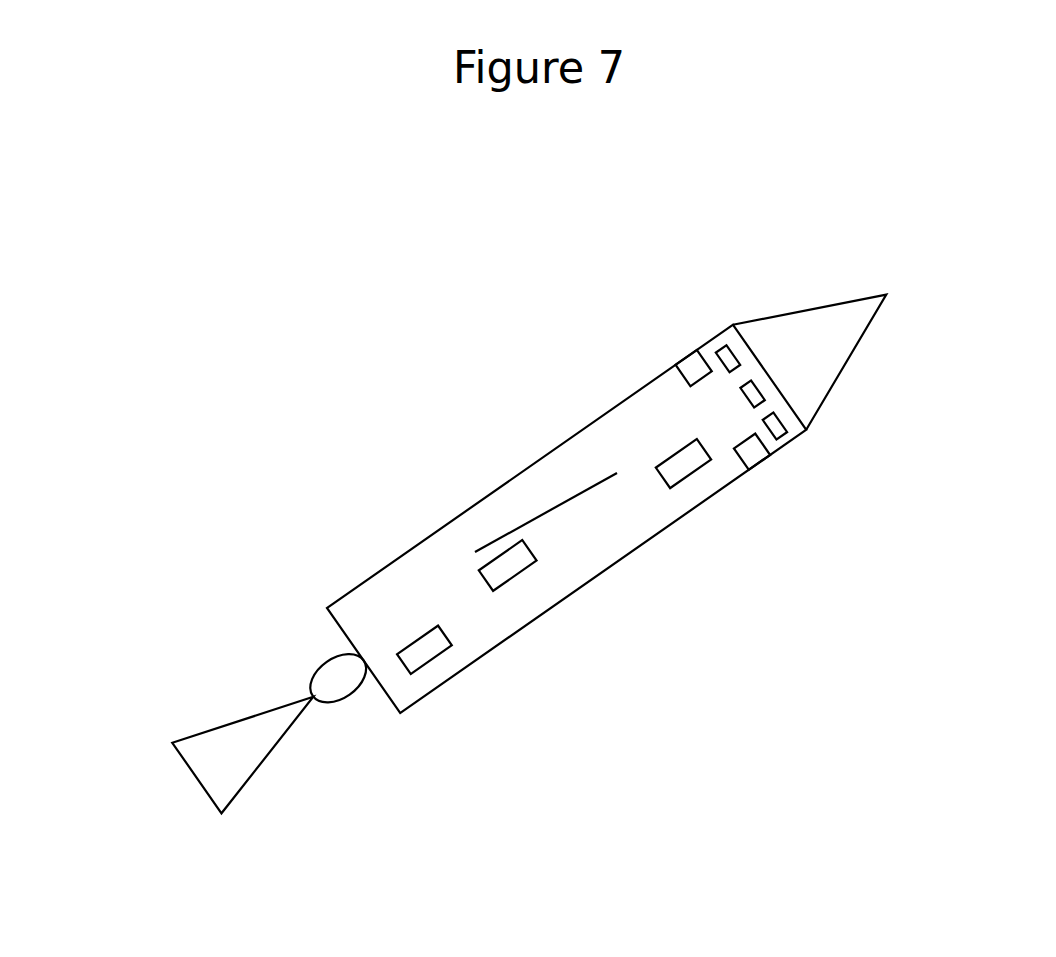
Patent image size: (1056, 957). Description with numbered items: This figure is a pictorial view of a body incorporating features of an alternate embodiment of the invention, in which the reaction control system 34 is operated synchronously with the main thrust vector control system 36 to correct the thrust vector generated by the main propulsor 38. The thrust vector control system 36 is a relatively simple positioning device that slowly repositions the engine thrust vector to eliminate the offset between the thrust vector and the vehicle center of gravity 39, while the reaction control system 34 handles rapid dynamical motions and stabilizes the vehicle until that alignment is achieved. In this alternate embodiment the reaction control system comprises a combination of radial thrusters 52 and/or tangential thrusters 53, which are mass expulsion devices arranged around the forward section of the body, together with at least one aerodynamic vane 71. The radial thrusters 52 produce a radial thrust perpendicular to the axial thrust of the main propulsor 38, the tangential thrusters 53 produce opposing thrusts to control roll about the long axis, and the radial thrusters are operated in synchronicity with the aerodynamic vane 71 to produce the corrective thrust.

The reaction control system 34 is at (687, 480).
The main thrust vector control system 36 is at (422, 668).
The main propulsor 38 is at (260, 777).
The vehicle center of gravity 39 is at (515, 578).
The radial thrusters 52 is at (735, 350).
The tangential thrusters 53 is at (685, 353).
The aerodynamic vane 71 is at (570, 495).